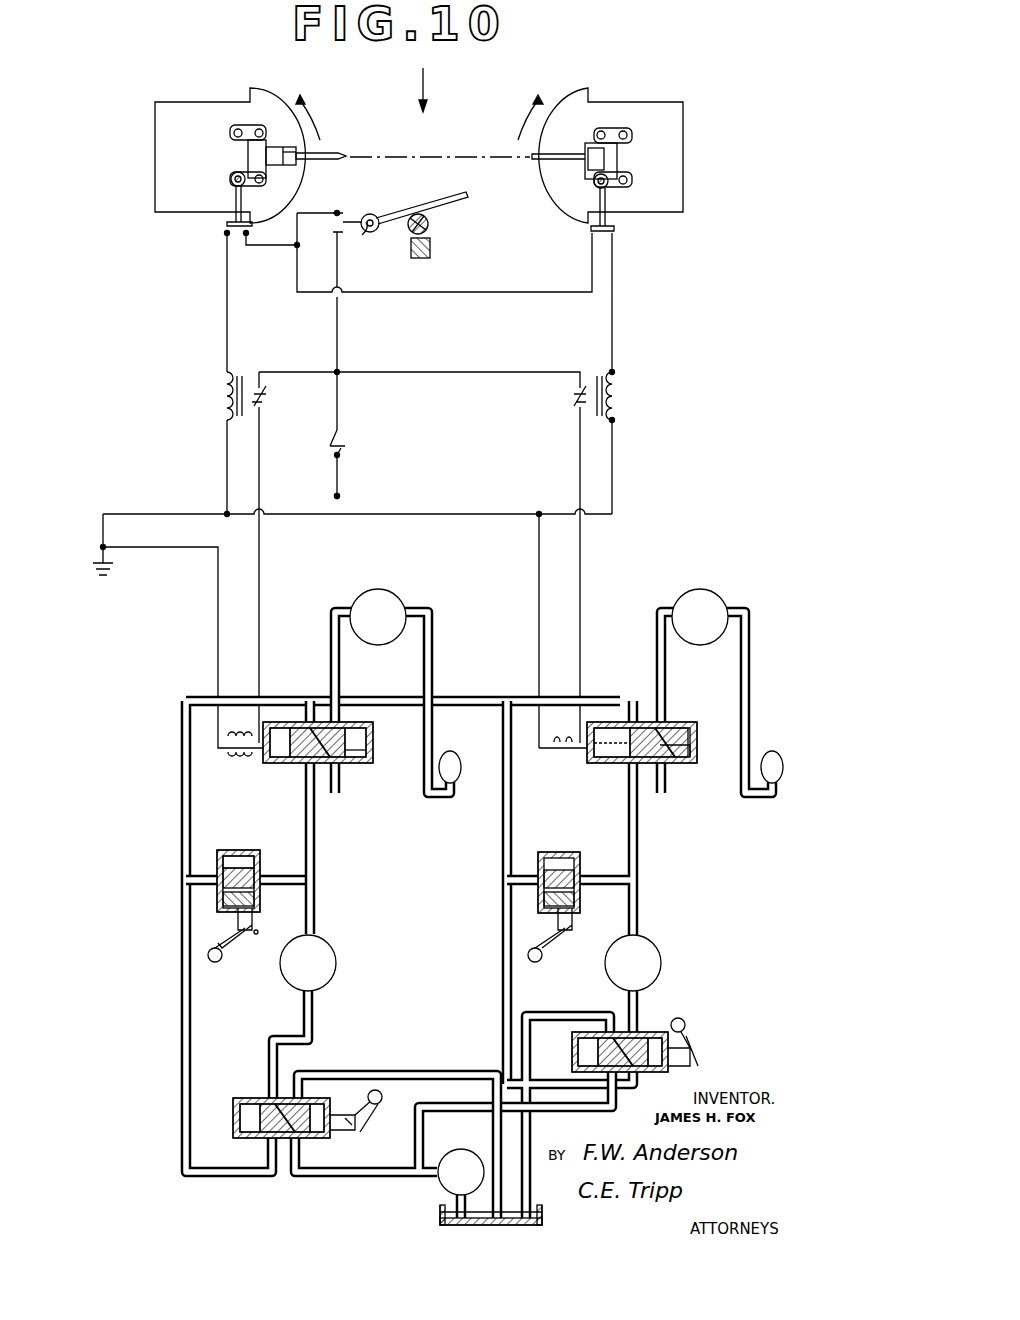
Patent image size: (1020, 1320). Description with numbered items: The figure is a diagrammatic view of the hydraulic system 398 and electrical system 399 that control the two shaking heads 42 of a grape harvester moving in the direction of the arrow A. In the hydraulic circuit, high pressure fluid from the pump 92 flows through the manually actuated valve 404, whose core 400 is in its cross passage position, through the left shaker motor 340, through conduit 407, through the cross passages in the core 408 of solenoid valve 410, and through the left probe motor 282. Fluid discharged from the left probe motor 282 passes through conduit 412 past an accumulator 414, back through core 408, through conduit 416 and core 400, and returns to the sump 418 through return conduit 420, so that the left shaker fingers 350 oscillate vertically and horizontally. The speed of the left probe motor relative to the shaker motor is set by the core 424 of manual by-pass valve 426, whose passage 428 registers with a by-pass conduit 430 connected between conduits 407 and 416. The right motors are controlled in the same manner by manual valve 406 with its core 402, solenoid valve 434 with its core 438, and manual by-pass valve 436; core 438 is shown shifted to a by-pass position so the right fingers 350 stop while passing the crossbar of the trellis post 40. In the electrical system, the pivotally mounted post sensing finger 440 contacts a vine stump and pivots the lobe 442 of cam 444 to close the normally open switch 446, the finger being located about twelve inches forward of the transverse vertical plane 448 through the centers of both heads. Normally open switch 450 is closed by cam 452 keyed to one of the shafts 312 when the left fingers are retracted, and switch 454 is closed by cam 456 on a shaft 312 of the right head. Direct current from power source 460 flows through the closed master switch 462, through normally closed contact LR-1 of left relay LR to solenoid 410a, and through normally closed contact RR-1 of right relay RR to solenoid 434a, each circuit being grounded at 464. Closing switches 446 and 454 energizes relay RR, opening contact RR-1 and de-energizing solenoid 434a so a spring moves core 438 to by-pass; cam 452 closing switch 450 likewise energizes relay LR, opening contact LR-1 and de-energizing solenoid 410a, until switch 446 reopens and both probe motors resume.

The shaking head 42 is at (136, 104).
The arrow A is at (423, 70).
The shaft 312 is at (236, 133).
The shaker fingers 350 is at (320, 154).
The transverse vertical plane 448 is at (422, 154).
The cam 452 is at (230, 185).
The cam 456 is at (608, 192).
The normally open switch 450 is at (230, 222).
The normally open switch 454 is at (612, 229).
The normally open switch 446 is at (348, 214).
The lobe 442 is at (360, 212).
The cam 444 is at (362, 235).
The post sensing finger 440 is at (430, 215).
The trellis post 40 is at (432, 250).
The electrical system 399 is at (178, 350).
The left relay LR is at (222, 398).
The right relay RR is at (620, 398).
The normally closed contact LR-1 is at (288, 406).
The normally closed contact RR-1 is at (570, 403).
The master switch 462 is at (345, 442).
The power source 460 is at (345, 496).
The ground 464 is at (103, 568).
The conduit 416 is at (198, 698).
The conduit 407 is at (318, 884).
The by-pass conduit 430 is at (298, 870).
The conduit 412 is at (432, 640).
The return conduit 420 is at (340, 1075).
The probe motor 282 is at (740, 590).
The accumulator 414 is at (452, 755).
The core 408 is at (372, 752).
The solenoid valve 410 is at (297, 765).
The solenoid 410a is at (225, 750).
The solenoid valve 434 is at (700, 708).
The core 438 is at (700, 752).
The solenoid 434a is at (555, 750).
The core 424 is at (240, 855).
The manual by-pass valve 426 is at (218, 854).
The passage 428 is at (262, 906).
The manual by-pass valve 436 is at (556, 850).
The shaker motor 340 is at (700, 972).
The core 400 is at (270, 1130).
The manually actuated valve 404 is at (233, 1106).
The manually actuated valve 406 is at (690, 1036).
The core 402 is at (655, 1036).
The pump 92 is at (438, 1180).
The sump 418 is at (440, 1215).
The hydraulic system 398 is at (140, 812).